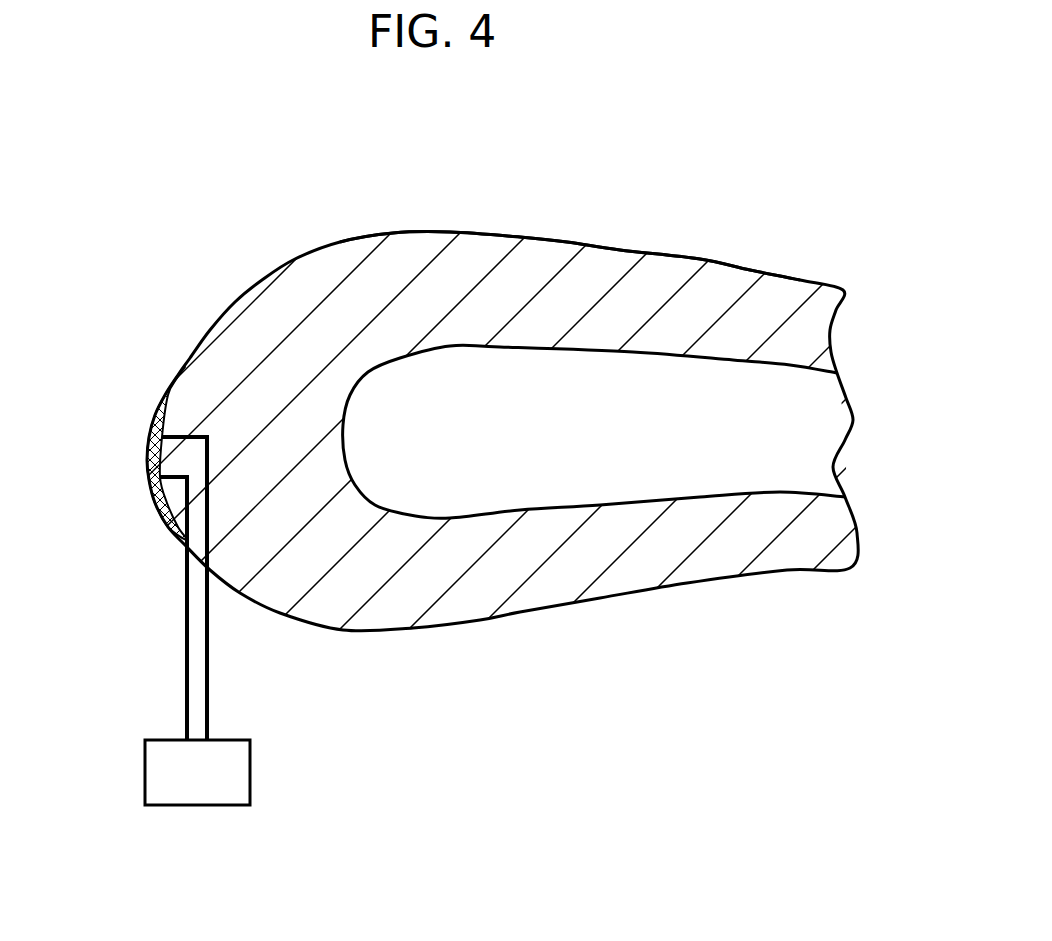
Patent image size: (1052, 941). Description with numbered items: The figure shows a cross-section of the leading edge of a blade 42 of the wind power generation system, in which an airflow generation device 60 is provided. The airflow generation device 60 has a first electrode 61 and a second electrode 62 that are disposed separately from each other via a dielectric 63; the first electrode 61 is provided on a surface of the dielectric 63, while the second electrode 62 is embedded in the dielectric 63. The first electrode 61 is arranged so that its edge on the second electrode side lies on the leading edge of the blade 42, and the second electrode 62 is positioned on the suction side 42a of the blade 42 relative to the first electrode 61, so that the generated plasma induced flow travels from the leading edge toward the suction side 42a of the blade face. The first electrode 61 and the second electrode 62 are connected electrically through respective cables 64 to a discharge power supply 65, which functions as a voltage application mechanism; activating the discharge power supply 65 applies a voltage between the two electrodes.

The blade 42 is at (512, 186).
The suction side 42a is at (610, 247).
The airflow generation device 60 is at (83, 413).
The first electrode 61 is at (148, 467).
The second electrode 62 is at (162, 418).
The dielectric 63 is at (164, 506).
The cables 64 is at (185, 662).
The discharge power supply 65 is at (163, 775).